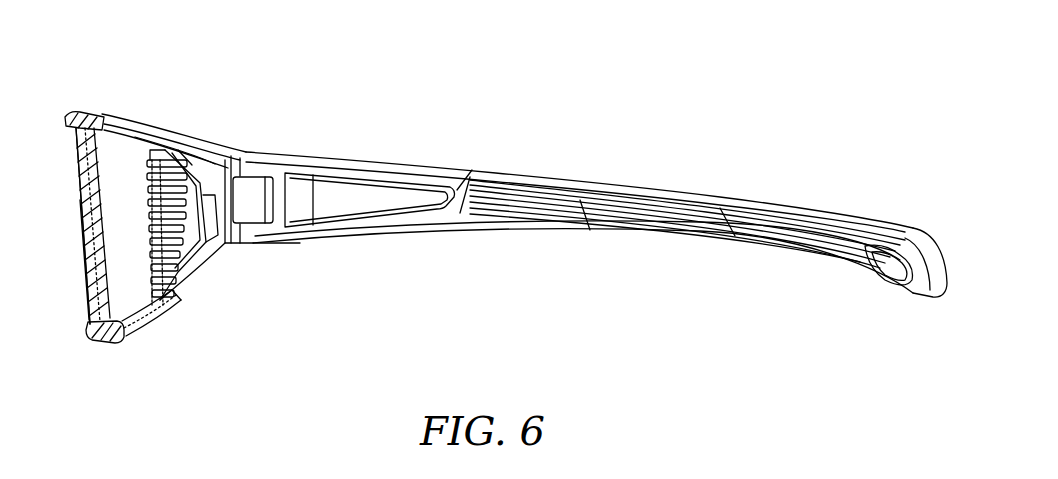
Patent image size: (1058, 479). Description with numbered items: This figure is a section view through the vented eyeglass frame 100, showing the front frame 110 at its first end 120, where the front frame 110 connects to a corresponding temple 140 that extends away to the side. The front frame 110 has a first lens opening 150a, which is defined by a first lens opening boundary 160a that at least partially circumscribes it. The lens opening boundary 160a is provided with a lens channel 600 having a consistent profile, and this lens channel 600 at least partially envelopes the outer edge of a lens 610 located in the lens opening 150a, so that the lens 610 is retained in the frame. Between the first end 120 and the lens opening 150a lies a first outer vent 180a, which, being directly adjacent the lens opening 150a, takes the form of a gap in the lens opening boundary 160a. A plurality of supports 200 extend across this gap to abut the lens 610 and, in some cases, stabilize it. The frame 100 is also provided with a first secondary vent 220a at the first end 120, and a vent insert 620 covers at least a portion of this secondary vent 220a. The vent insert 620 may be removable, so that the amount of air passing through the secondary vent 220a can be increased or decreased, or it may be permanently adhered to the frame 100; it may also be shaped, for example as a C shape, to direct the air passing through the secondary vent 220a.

The eyeglass frame 100 is at (414, 130).
The front frame 110 is at (122, 117).
The first end 120 is at (213, 147).
The temple 140 is at (520, 188).
The first lens opening 150a is at (80, 262).
The first lens opening boundary 160a is at (115, 338).
The first outer vent 180a is at (170, 243).
The supports 200 is at (160, 217).
The first secondary vent 220a is at (188, 212).
The lens channel 600 is at (83, 126).
The lens 610 is at (82, 210).
The vent insert 620 is at (213, 216).